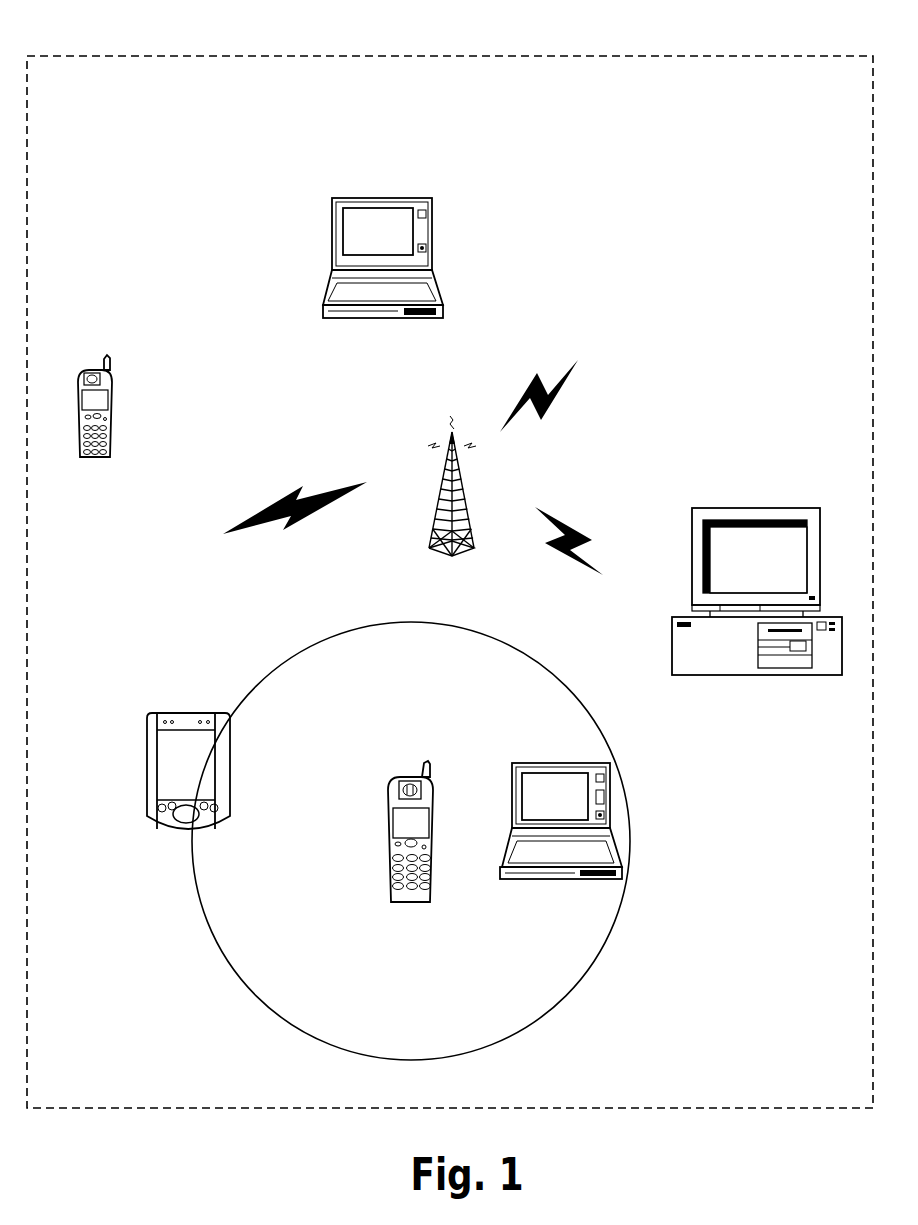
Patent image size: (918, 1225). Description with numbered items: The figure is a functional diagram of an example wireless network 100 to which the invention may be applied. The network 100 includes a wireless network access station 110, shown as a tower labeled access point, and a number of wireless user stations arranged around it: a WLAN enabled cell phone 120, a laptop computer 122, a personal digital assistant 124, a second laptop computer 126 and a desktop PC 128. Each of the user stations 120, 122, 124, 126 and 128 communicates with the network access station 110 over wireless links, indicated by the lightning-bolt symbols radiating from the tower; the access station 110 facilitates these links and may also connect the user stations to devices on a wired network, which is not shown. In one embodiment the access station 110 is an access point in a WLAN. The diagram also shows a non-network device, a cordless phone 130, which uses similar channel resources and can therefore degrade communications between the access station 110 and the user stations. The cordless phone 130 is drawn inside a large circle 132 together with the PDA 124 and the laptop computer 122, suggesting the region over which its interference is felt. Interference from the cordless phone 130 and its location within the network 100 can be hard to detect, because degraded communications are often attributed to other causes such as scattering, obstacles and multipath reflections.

The wireless network 100 is at (240, 50).
The wireless network access station 110 is at (437, 495).
The WLAN enabled cell phone 120 is at (113, 397).
The laptop computer 122 is at (560, 763).
The personal digital assistant 124 is at (147, 772).
The laptop computer 126 is at (383, 199).
The desktop PC 128 is at (753, 508).
The cordless phone 130 is at (388, 830).
The interference range circle 132 is at (578, 983).